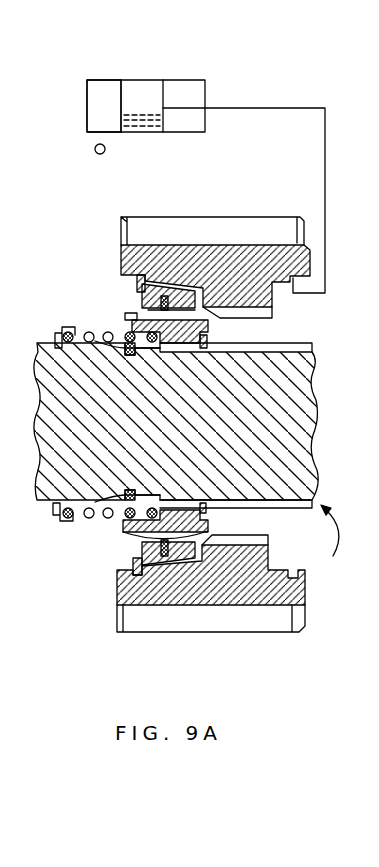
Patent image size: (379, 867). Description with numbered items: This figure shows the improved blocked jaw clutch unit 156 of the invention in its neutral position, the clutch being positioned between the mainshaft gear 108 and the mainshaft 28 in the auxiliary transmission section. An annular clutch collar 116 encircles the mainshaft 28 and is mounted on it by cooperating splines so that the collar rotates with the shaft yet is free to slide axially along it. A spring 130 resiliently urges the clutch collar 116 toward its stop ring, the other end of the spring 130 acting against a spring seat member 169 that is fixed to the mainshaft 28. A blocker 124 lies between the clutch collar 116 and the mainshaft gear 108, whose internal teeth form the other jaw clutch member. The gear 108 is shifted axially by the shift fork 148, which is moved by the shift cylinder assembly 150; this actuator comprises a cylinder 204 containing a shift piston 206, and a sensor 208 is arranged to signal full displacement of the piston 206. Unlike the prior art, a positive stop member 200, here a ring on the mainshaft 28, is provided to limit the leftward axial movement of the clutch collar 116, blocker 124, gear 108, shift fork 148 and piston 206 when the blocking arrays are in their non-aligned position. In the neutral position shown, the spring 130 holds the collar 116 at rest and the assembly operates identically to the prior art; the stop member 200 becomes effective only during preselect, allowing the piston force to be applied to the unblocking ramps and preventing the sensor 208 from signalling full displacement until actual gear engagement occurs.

The shift cylinder assembly 150 is at (197, 70).
The cylinder 204 is at (112, 78).
The shift piston 206 is at (142, 126).
The sensor 208 is at (95, 154).
The shift fork 148 is at (325, 195).
The mainshaft gear 108 is at (201, 233).
The blocker 124 is at (140, 297).
The clutch collar 116 is at (128, 323).
The mainshaft 28 is at (285, 367).
The spring seat member 169 is at (58, 348).
The positive stop member 200 is at (132, 355).
The spring 130 is at (98, 516).
The jaw clutch unit 156 is at (316, 536).